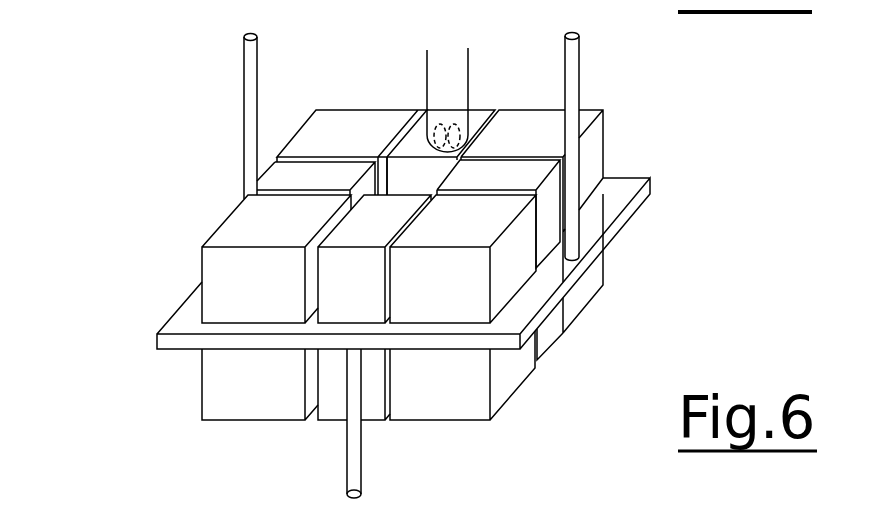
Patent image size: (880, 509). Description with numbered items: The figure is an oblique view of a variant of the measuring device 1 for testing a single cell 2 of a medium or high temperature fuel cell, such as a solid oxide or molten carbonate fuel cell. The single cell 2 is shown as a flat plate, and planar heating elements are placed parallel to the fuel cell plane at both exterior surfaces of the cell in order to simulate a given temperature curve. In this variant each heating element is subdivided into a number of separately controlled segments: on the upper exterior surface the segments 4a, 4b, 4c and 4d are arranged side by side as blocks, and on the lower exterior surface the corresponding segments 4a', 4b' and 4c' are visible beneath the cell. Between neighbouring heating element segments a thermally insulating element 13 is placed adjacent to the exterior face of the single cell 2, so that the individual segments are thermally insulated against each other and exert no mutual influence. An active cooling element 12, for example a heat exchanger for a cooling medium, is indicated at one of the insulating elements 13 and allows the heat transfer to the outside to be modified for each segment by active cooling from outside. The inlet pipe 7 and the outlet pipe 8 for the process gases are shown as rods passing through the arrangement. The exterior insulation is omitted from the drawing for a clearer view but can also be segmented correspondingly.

The measuring device 1 is at (207, 197).
The single cell 2 is at (633, 208).
The heating element segment 4a is at (242, 259).
The heating element segment 4b is at (463, 259).
The heating element segment 4c is at (570, 196).
The heating element segment 4d is at (374, 143).
The heating element segment 4a' is at (260, 419).
The heating element segment 4b' is at (462, 410).
The heating element segment 4c' is at (619, 263).
The inlet pipe 7 is at (248, 64).
The outlet pipe 8 is at (574, 67).
The active cooling element 12 is at (438, 128).
The thermally insulating element 13 is at (287, 177).